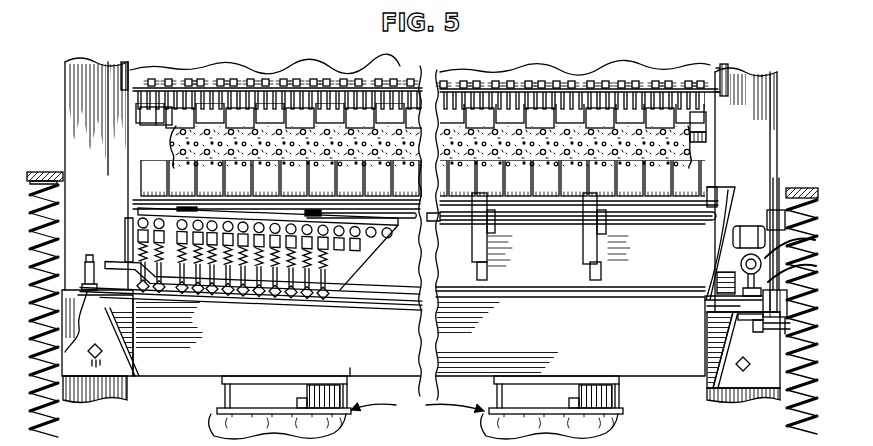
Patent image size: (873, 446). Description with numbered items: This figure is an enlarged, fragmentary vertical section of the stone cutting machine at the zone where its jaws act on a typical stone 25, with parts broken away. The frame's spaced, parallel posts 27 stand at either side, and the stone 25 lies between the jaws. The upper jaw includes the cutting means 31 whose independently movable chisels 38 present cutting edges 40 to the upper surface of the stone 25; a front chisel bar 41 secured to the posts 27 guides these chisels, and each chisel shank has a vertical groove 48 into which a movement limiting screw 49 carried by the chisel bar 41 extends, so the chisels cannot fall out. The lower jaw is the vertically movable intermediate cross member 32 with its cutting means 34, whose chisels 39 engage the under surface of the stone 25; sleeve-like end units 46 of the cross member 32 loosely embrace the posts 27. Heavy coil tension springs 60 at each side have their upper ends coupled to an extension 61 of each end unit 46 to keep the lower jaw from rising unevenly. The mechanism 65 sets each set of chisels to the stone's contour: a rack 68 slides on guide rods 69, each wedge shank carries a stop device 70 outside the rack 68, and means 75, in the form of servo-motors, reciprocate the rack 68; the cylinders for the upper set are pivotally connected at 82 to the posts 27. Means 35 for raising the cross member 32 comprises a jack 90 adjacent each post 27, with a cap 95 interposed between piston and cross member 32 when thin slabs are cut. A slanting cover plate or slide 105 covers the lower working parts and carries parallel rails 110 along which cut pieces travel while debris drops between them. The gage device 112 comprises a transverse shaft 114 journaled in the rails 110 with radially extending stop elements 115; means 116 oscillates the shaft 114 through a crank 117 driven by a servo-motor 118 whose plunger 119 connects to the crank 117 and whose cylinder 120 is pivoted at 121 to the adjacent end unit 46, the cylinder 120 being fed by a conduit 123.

The stone 25 is at (500, 157).
The posts 27 is at (65, 114).
The cutting means 31 is at (722, 79).
The intermediate cross member 32 is at (353, 374).
The cutting means 34 is at (686, 150).
The means for actuating the intermediate cross member 35 is at (417, 405).
The chisels 38 is at (580, 115).
The chisels 39 is at (654, 202).
The cutting edges 40 is at (178, 148).
The front chisel bar 41 is at (268, 72).
The sleeve-like end units 46 is at (133, 378).
The vertical groove 48 is at (168, 114).
The movement limiting screw 49 is at (169, 77).
The coil tension springs 60 is at (58, 424).
The extension 61 is at (38, 172).
The mechanism 65 is at (140, 296).
The rack 68 is at (103, 258).
The guide rods 69 is at (124, 234).
The stop device 70 is at (272, 282).
The means for reciprocating the rack 75 is at (741, 262).
The pivotal connection 82 is at (733, 238).
The jack 90 is at (213, 418).
The cap 95 is at (222, 392).
The cover plate or slide 105 is at (552, 292).
The rails 110 is at (478, 252).
The gage device 112 is at (475, 220).
The transverse shaft 114 is at (518, 220).
The stop elements 115 is at (602, 248).
The means for oscillating the shaft 116 is at (732, 324).
The crank 117 is at (769, 214).
The servo-motor 118 is at (757, 332).
The plunger 119 is at (717, 274).
The cylinder 120 is at (707, 318).
The pivot 121 is at (744, 328).
The conduit 123 is at (744, 366).